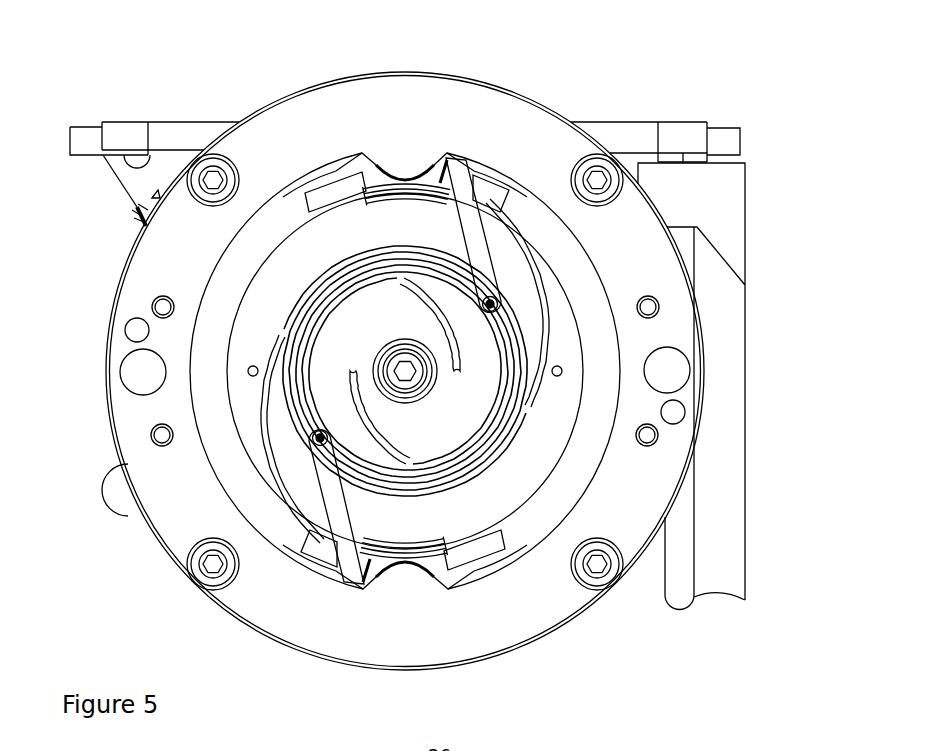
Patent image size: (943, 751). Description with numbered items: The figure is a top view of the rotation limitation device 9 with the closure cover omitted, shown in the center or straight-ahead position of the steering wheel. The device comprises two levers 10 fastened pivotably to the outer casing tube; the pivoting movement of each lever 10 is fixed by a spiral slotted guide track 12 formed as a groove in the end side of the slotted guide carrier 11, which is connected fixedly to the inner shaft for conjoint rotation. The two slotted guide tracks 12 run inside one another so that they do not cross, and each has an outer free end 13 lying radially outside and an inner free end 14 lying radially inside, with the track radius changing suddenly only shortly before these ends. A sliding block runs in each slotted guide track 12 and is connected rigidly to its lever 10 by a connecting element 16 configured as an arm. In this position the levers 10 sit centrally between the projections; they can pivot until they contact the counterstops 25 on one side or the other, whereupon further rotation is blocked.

The rotation limitation device 9 is at (597, 65).
The lever 10 is at (352, 177).
The slotted guide carrier 11 is at (543, 450).
The slotted guide track 12 is at (507, 470).
The outer free end 13 is at (363, 192).
The inner free end 14 is at (460, 367).
The connecting element 16 is at (478, 265).
The counterstop 25 is at (505, 207).